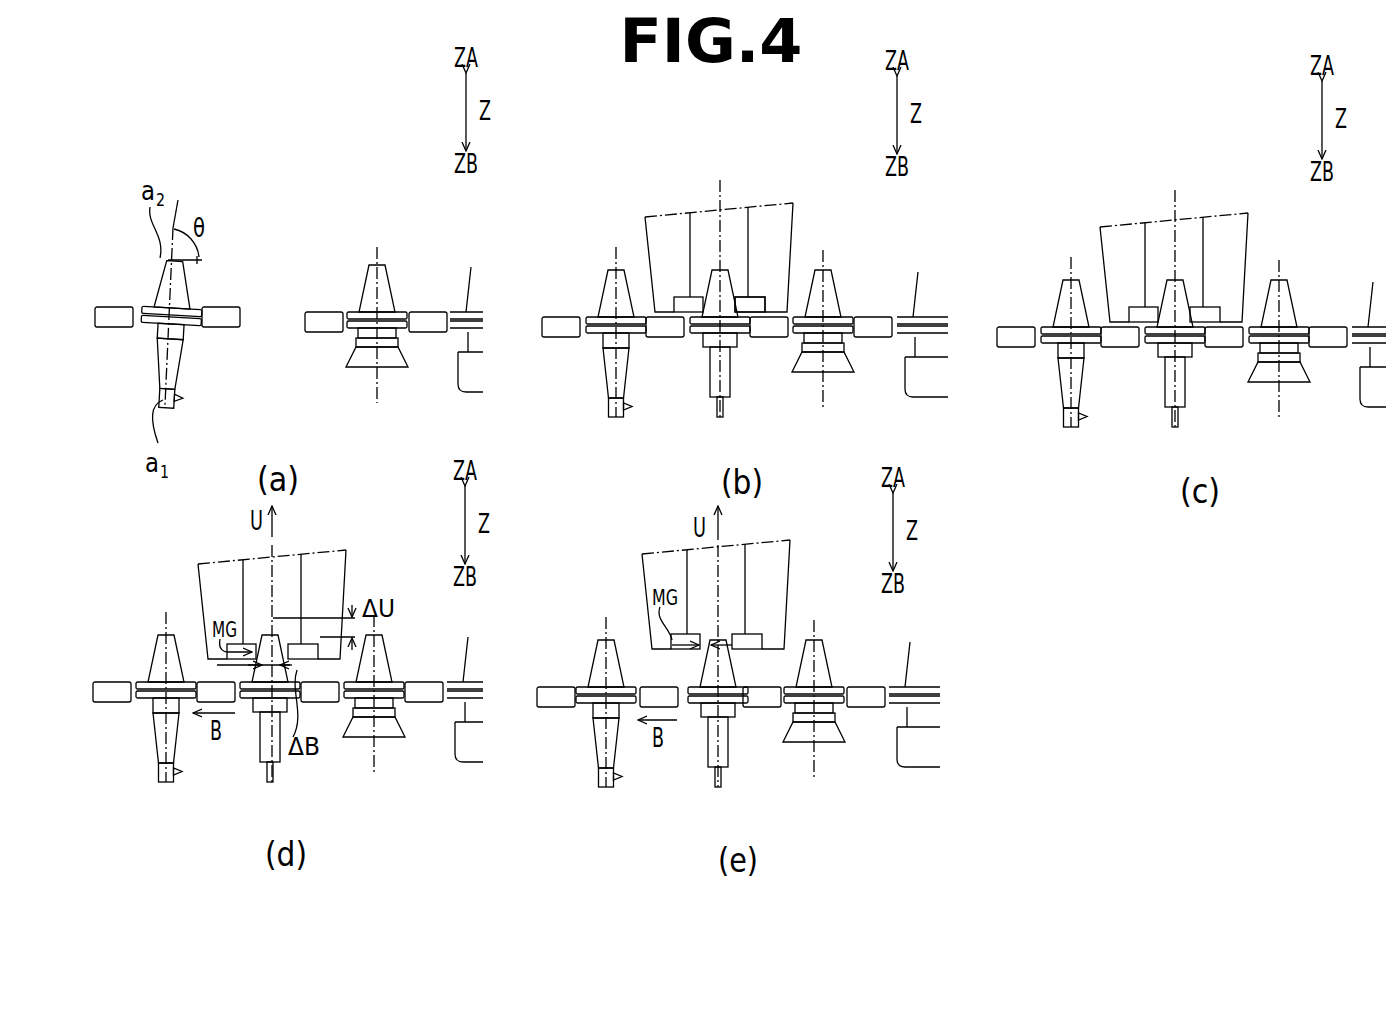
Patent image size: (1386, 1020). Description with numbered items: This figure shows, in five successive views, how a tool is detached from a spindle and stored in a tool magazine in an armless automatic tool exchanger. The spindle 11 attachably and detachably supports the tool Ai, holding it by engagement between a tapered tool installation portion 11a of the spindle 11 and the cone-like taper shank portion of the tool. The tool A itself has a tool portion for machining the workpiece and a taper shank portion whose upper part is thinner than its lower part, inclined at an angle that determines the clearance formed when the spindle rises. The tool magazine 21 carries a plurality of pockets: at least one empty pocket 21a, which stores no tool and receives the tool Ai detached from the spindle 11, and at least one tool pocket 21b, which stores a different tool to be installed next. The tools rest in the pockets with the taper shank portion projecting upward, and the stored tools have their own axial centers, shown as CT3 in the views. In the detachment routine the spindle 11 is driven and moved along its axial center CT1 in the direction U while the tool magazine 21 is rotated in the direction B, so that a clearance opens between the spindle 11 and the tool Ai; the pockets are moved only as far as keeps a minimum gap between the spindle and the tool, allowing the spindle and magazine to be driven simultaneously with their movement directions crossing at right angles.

The spindle 11 is at (793, 228).
The tool installation portion 11a is at (740, 297).
The tool magazine 21 is at (434, 305).
The empty pocket 21a is at (240, 328).
The tool pocket 21b is at (133, 328).
The tool A is at (150, 292).
The tool Ai is at (710, 381).
The axial center CT1 is at (722, 190).
The tool center axis CT3 is at (376, 400).